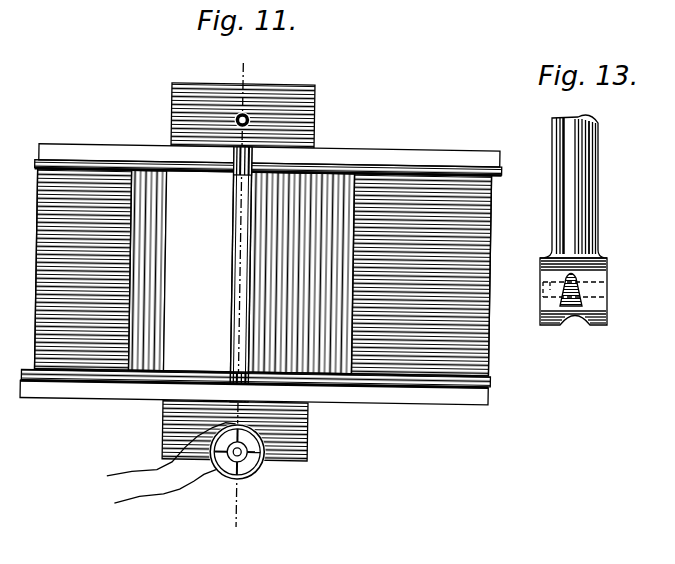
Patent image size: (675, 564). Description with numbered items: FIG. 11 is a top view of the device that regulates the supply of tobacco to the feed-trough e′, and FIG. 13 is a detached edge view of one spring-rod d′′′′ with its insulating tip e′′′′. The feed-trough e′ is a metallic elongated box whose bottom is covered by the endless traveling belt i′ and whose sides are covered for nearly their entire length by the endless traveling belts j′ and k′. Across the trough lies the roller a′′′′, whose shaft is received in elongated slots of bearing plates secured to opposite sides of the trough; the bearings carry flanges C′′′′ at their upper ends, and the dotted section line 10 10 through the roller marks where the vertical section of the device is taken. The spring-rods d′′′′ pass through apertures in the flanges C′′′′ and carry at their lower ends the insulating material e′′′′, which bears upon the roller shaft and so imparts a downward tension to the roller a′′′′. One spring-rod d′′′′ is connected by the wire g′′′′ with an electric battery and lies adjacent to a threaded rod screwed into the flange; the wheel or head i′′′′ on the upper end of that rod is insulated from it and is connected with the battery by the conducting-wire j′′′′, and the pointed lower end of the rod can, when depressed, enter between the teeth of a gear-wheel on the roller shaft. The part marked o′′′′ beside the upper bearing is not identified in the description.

In FIG. 11, the dotted section line 10 is at (239, 298).
In FIG. 11, the upper bearing block o′′′′ is at (255, 116).
In FIG. 11, the endless traveling belt k′ is at (500, 170).
In FIG. 11, the roller a′′′′ is at (263, 272).
In FIG. 11, the endless traveling belt i′ is at (496, 333).
In FIG. 11, the endless traveling belt j′ is at (492, 382).
In FIG. 11, the feed-trough e′ is at (254, 404).
In FIG. 11, the flange C′′′′ is at (248, 431).
In FIG. 11, the wheel or head i′′′′ is at (257, 475).
In FIG. 11, the wire g′′′′ is at (171, 449).
In FIG. 11, the conducting-wire j′′′′ is at (165, 492).
In FIG. 13, the spring-rod d′′′′ is at (605, 198).
In FIG. 13, the insulating material e′′′′ is at (573, 299).